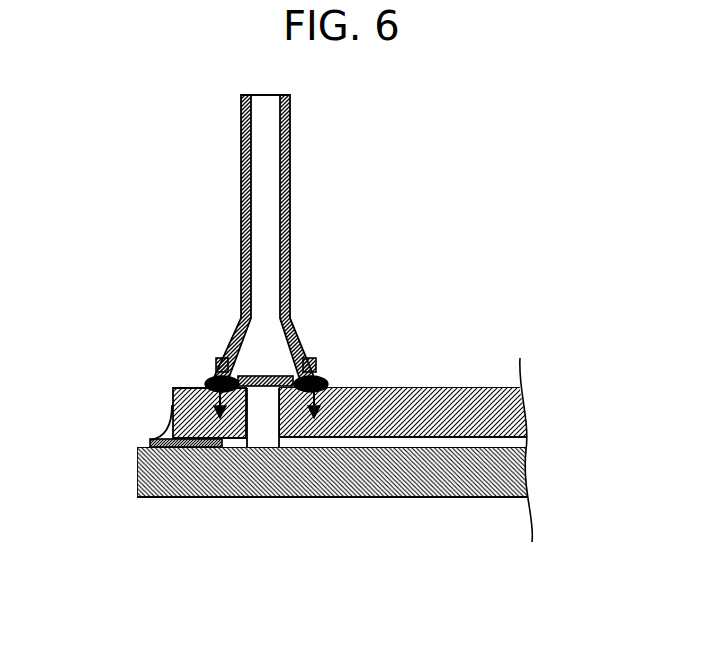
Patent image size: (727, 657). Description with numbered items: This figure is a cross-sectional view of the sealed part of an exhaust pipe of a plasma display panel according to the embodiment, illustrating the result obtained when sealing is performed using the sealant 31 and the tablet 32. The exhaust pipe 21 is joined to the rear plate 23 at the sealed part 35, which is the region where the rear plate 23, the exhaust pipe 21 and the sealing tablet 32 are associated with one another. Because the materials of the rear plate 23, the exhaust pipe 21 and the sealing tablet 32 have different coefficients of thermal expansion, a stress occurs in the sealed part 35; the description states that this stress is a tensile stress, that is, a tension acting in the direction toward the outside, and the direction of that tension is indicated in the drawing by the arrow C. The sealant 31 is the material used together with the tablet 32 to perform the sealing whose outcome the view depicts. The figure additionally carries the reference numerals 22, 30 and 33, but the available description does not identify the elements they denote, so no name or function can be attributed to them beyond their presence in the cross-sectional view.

The exhaust pipe 21 is at (290, 203).
The substrate 22 is at (367, 478).
The rear plate 23 is at (455, 405).
The opening 30 is at (263, 417).
The sealant 31 is at (160, 433).
The sealing tablet 32 is at (220, 362).
The bottom plate 33 is at (257, 380).
The sealed part 35 is at (205, 385).
The arrow C is at (313, 405).